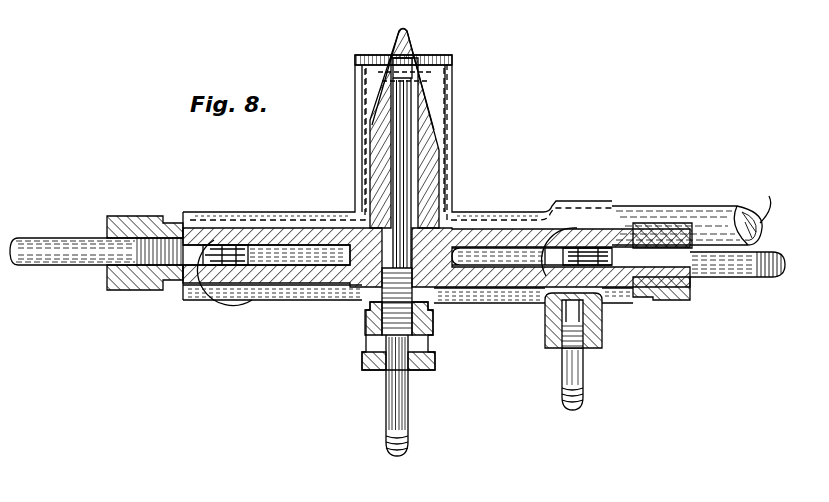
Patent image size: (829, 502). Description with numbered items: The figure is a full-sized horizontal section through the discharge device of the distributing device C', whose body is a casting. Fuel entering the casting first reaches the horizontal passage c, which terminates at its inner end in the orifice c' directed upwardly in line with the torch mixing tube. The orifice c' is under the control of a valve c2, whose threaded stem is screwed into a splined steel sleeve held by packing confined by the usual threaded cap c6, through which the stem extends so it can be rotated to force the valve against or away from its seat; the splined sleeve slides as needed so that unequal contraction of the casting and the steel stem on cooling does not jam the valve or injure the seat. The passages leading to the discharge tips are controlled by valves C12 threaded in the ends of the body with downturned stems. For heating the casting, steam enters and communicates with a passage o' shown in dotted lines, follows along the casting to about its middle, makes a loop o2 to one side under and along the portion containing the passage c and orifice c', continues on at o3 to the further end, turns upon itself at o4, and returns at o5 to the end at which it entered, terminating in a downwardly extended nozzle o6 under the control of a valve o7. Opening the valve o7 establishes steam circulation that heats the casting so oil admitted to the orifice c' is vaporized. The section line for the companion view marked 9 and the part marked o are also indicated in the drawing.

The spindle 9 is at (403, 28).
The orifice c' is at (404, 78).
The valve c2 is at (447, 72).
The horizontal passage c is at (418, 129).
The loop o2 is at (362, 170).
The turn of steam passage o4 is at (236, 212).
The continuing steam passage o3 is at (281, 212).
The passage o' is at (397, 226).
The valve C12 is at (247, 300).
The tube o is at (698, 243).
The return passage o5 is at (292, 300).
The threaded cap c6 is at (408, 336).
The distributing device C' is at (254, 286).
The nozzle o6 is at (548, 308).
The valve o7 is at (580, 372).